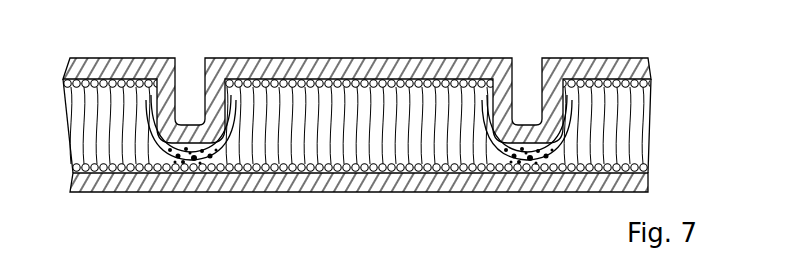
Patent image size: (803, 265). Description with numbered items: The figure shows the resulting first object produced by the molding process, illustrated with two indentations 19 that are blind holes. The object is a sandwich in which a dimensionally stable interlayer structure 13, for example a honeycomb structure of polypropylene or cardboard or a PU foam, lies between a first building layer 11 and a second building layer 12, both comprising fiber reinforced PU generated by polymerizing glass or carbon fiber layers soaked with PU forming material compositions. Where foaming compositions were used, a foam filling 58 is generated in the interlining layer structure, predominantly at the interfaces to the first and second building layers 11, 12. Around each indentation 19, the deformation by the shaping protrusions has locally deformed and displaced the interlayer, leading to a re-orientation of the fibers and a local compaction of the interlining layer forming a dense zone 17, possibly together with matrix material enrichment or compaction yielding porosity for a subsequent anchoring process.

The first building layer 11 is at (635, 70).
The second building layer 12 is at (637, 182).
The interlayer structure 13 is at (650, 128).
The dense zone 17 is at (168, 172).
The indentations 19 is at (180, 56).
The foam filling 58 is at (370, 83).